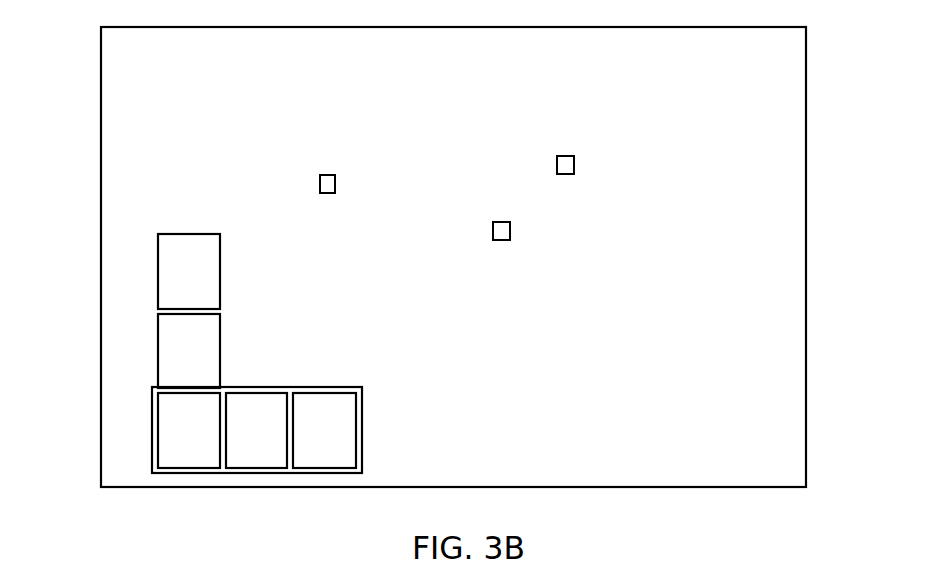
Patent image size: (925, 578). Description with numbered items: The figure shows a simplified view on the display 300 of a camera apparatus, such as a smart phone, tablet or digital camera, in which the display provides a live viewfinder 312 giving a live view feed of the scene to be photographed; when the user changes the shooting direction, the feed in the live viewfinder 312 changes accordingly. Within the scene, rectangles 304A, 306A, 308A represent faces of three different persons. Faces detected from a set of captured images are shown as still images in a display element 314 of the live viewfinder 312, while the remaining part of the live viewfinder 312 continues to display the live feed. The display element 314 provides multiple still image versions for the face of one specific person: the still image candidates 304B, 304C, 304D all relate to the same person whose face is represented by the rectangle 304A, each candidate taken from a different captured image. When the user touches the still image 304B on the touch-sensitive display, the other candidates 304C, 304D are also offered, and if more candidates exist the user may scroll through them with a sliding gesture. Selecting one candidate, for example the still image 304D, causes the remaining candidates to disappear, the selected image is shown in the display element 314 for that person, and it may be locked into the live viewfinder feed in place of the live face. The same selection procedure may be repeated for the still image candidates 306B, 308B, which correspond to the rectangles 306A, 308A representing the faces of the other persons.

The display 300 is at (806, 45).
The live viewfinder 312 is at (642, 88).
The rectangle representing a face 304A is at (335, 183).
The rectangle representing a face 306A is at (510, 230).
The rectangle representing a face 308A is at (574, 165).
The still image candidate 304B is at (158, 412).
The still image candidate 304C is at (220, 318).
The still image candidate 304D is at (220, 243).
The still image candidate 306B is at (258, 388).
The still image candidate 308B is at (326, 388).
The display element 314 is at (362, 428).